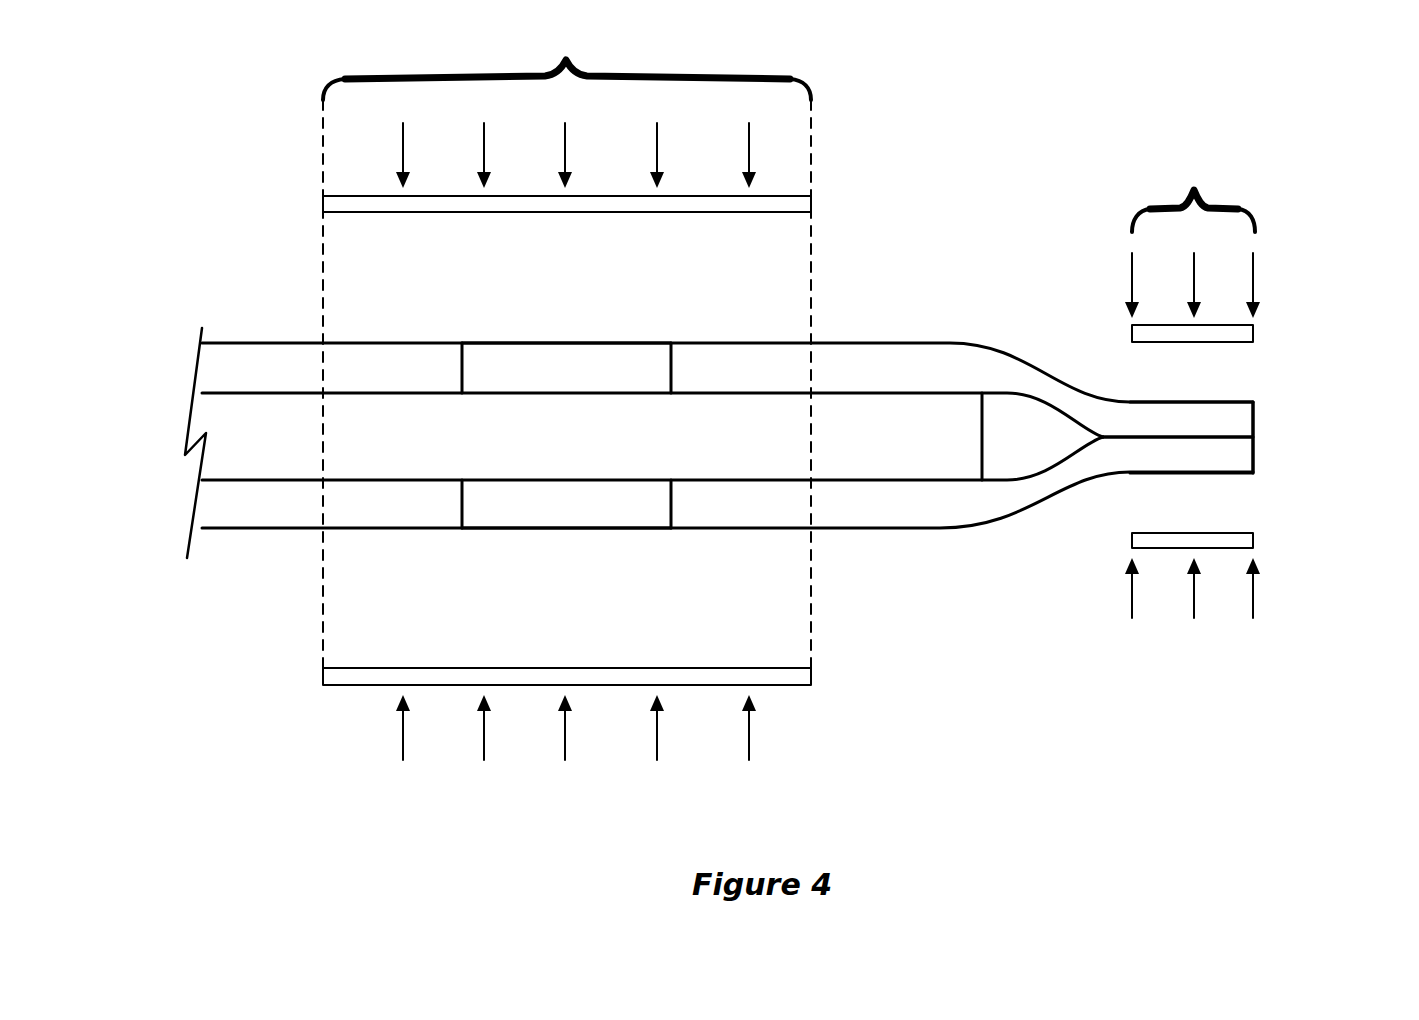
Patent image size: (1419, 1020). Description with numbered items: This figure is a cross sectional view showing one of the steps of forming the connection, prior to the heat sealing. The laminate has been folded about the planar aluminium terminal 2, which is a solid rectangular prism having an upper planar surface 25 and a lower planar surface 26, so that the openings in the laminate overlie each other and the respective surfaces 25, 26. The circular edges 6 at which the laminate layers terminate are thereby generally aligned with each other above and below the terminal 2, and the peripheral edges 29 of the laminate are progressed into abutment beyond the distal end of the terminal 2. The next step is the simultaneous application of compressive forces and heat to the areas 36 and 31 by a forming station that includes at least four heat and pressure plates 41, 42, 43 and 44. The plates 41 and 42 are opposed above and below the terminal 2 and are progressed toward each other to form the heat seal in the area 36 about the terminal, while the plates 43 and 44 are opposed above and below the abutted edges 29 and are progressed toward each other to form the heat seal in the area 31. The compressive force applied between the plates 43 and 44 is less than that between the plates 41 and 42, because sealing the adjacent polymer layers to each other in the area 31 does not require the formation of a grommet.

The terminal 2 is at (253, 425).
The edge 6 is at (543, 312).
The upper planar surface 25 is at (856, 393).
The lower planar surface 26 is at (856, 480).
The peripheral edge 29 is at (1238, 418).
The heat sealing area 31 is at (1193, 190).
The heat seal area 36 is at (567, 345).
The heat and pressure plate 41 is at (800, 205).
The heat and pressure plate 42 is at (811, 685).
The heat and pressure plate 43 is at (1242, 334).
The heat and pressure plate 44 is at (1242, 541).